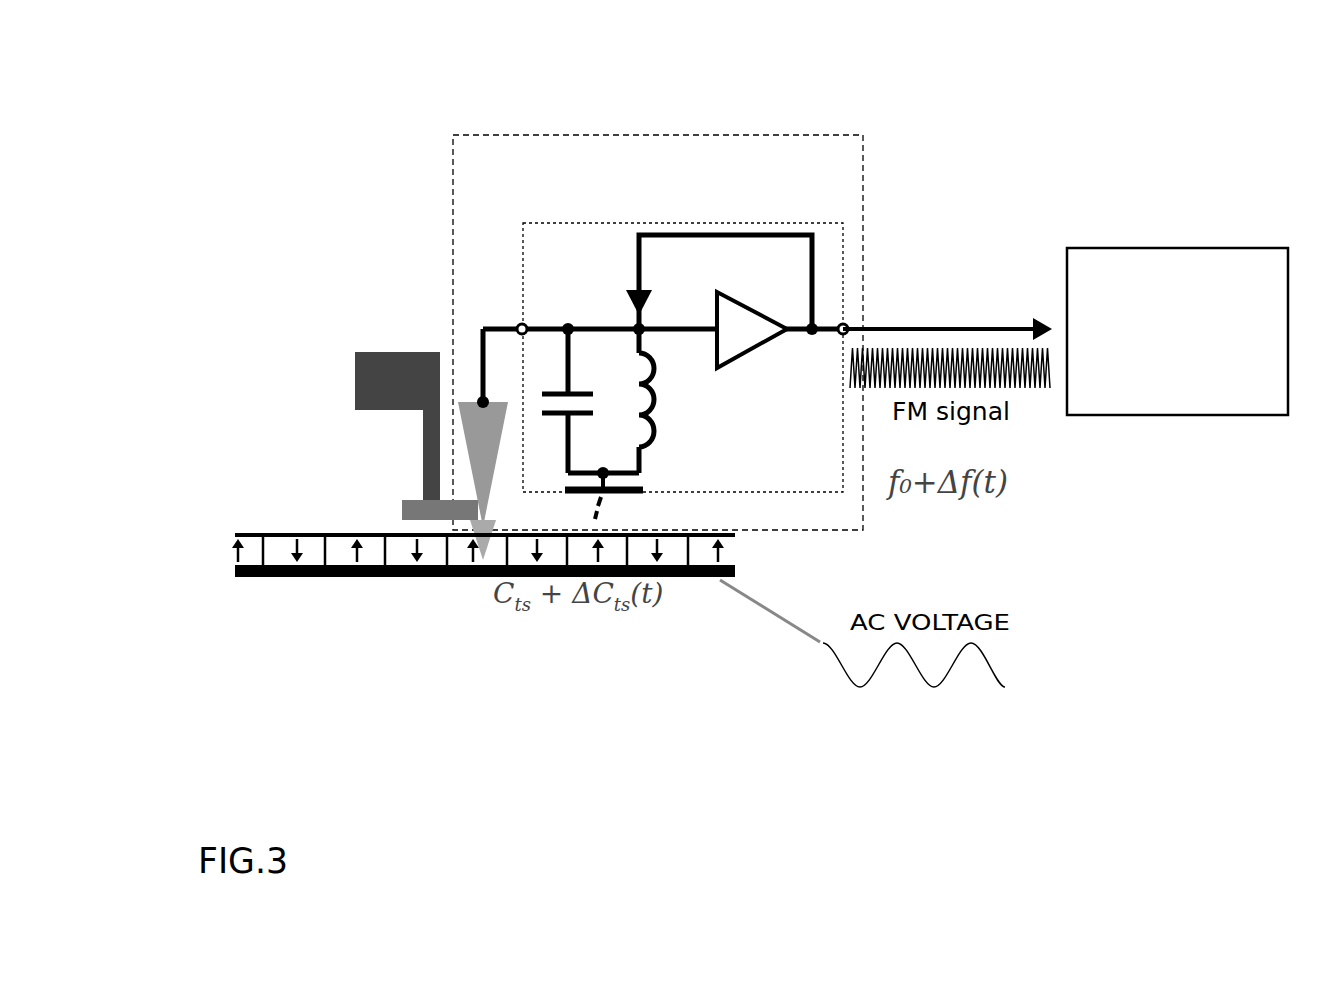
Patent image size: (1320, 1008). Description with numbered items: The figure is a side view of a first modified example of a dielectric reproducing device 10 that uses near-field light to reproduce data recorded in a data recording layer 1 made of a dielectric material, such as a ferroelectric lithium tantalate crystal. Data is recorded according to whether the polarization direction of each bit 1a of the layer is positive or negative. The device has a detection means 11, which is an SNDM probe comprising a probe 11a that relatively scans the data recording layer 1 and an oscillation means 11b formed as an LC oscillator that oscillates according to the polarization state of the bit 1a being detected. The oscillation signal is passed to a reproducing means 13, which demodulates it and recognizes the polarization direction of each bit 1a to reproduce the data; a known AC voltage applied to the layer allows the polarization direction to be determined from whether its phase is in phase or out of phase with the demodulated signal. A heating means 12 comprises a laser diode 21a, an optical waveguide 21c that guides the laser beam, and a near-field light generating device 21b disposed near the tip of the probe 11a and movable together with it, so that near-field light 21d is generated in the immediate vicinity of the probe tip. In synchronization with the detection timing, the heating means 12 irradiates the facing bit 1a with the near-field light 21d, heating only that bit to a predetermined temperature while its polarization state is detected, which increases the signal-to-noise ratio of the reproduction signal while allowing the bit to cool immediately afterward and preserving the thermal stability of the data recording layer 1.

The dielectric reproducing device 10 is at (204, 134).
The detection means 11 is at (863, 190).
The probe 11a is at (483, 488).
The oscillation means 11b is at (742, 222).
The heating means 12 is at (358, 362).
The reproducing means 13 is at (1177, 248).
The data recording layer 1 is at (428, 625).
The bit 1a is at (402, 578).
The laser diode 21a is at (397, 350).
The near-field light generating device 21b is at (402, 508).
The optical waveguide 21c is at (425, 457).
The near-field light 21d is at (487, 580).